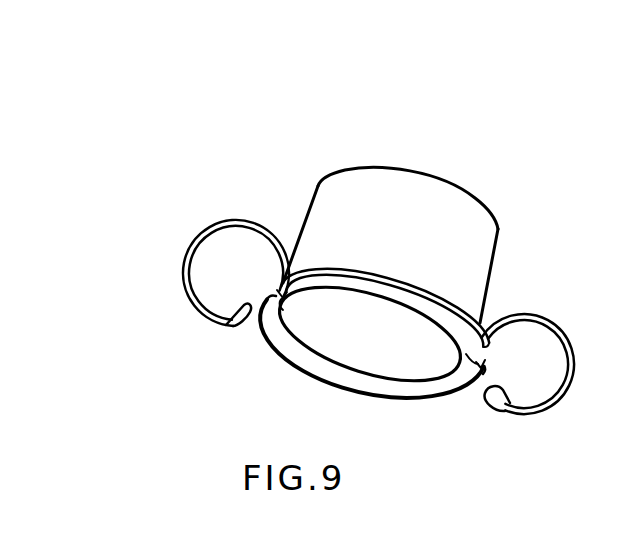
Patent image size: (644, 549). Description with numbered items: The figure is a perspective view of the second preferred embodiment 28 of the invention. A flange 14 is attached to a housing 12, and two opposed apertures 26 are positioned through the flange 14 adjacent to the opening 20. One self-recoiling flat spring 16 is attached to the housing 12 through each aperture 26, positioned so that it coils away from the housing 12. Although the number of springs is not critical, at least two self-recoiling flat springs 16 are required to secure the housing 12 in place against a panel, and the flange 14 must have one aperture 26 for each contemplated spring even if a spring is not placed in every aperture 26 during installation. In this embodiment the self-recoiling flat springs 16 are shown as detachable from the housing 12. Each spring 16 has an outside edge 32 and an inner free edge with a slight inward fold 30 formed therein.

The housing 12 is at (497, 231).
The flange 14 is at (339, 376).
The self-recoiling flat spring 16 is at (186, 259).
The opening 20 is at (408, 371).
The aperture 26 is at (266, 284).
The second preferred embodiment 28 is at (308, 161).
The inward fold 30 is at (230, 319).
The outside edge 32 is at (290, 306).